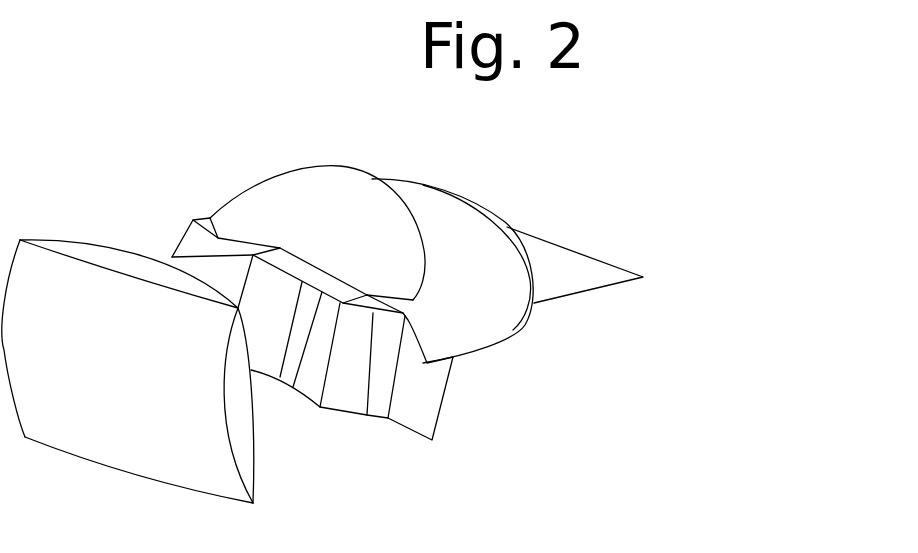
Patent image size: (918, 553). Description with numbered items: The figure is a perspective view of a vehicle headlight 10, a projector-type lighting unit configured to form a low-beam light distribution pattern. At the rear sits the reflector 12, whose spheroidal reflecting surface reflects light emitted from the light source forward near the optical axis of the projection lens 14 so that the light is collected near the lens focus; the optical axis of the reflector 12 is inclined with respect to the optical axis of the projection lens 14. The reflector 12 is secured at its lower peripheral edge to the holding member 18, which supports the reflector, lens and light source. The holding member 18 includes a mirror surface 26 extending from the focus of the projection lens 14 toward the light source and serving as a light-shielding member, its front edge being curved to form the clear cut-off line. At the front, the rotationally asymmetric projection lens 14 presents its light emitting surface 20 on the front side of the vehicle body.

The vehicle headlight 10 is at (228, 113).
The reflector 12 is at (440, 217).
The projection lens 14 is at (87, 253).
The holding member 18 is at (347, 397).
The light emitting surface 20 is at (145, 460).
The mirror surface 26 is at (343, 288).